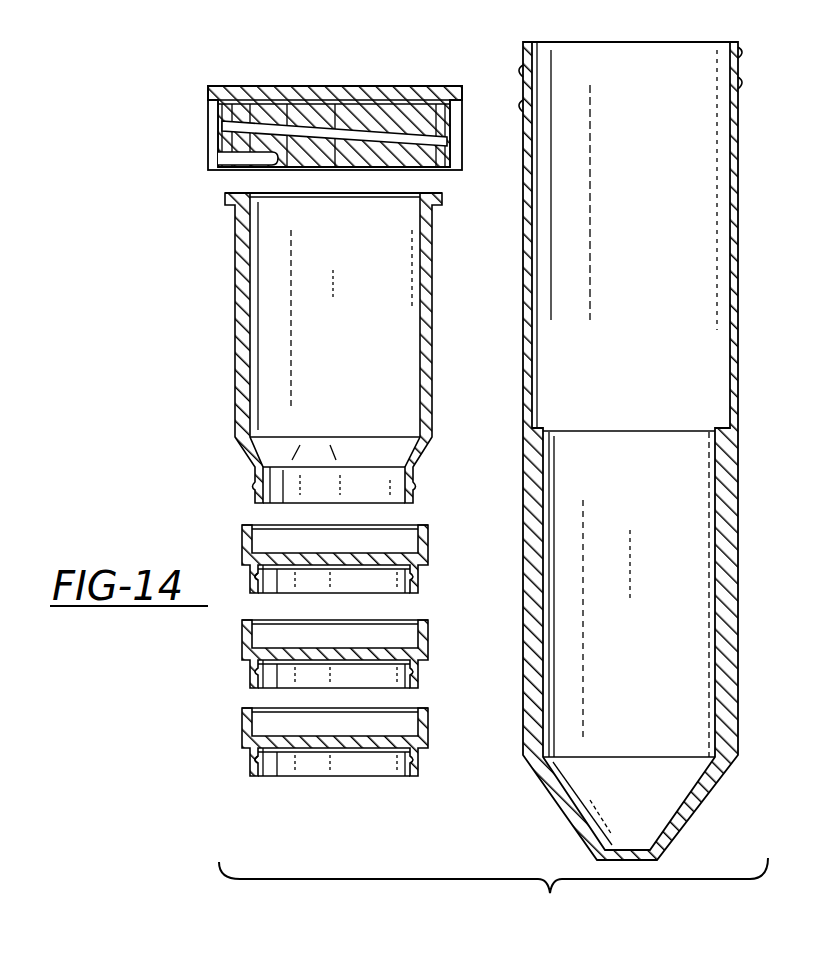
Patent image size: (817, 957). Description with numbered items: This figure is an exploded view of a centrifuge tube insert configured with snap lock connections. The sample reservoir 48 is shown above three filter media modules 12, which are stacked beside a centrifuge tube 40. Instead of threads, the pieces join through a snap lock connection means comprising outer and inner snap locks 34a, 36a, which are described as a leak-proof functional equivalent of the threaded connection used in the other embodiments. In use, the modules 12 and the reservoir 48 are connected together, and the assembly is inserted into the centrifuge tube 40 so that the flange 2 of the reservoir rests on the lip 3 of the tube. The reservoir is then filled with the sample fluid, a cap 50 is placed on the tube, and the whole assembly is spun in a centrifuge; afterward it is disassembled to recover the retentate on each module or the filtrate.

The flange 2 is at (226, 197).
The lip 3 is at (738, 50).
The filter media module 12 is at (434, 545).
The outer snap lock 34a is at (254, 758).
The inner snap lock 36a is at (272, 528).
The centrifuge tube 40 is at (745, 316).
The sample reservoir 48 is at (233, 328).
The cap 50 is at (208, 126).